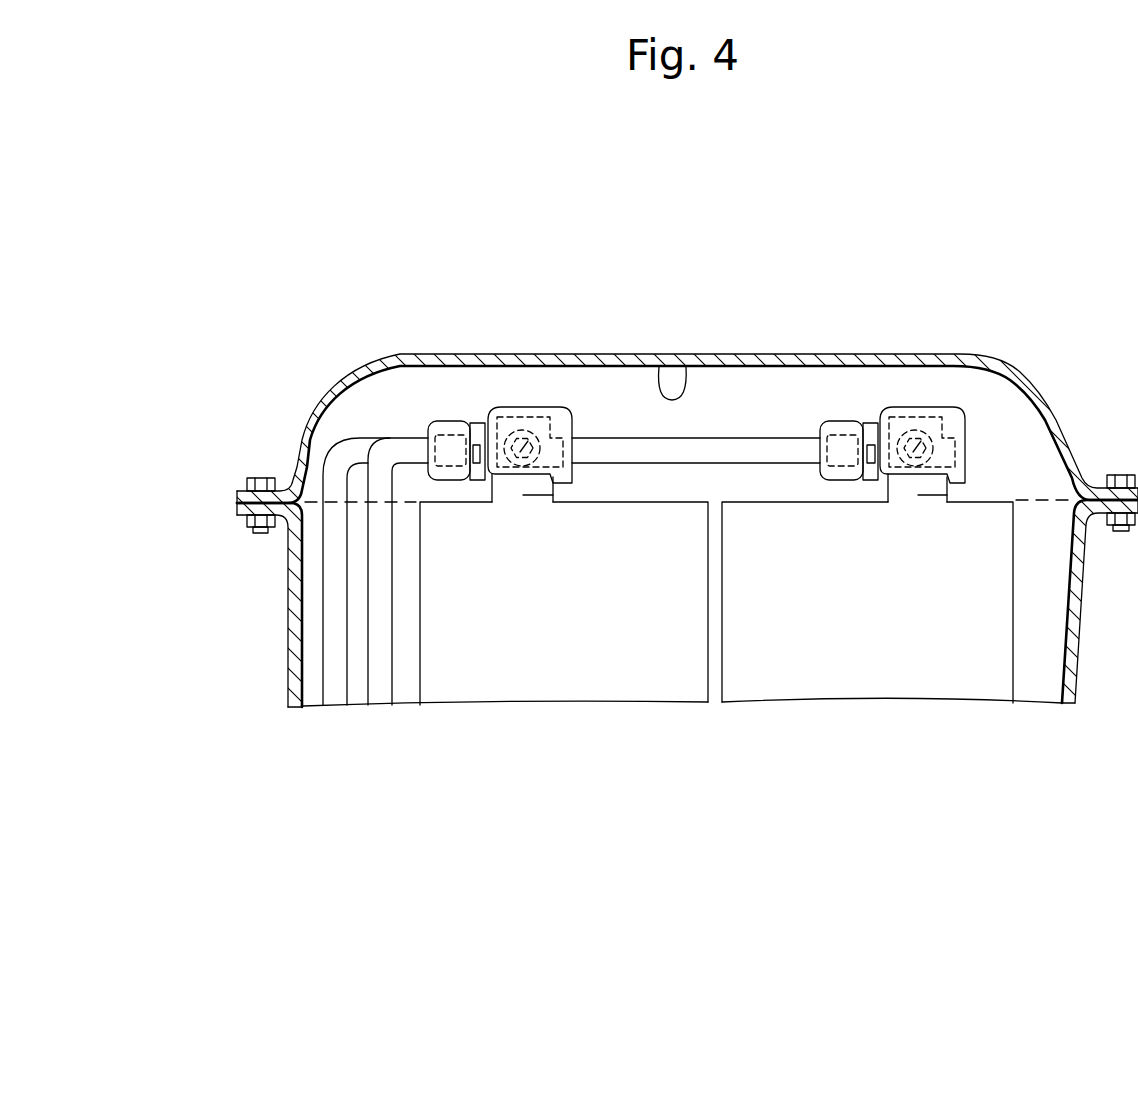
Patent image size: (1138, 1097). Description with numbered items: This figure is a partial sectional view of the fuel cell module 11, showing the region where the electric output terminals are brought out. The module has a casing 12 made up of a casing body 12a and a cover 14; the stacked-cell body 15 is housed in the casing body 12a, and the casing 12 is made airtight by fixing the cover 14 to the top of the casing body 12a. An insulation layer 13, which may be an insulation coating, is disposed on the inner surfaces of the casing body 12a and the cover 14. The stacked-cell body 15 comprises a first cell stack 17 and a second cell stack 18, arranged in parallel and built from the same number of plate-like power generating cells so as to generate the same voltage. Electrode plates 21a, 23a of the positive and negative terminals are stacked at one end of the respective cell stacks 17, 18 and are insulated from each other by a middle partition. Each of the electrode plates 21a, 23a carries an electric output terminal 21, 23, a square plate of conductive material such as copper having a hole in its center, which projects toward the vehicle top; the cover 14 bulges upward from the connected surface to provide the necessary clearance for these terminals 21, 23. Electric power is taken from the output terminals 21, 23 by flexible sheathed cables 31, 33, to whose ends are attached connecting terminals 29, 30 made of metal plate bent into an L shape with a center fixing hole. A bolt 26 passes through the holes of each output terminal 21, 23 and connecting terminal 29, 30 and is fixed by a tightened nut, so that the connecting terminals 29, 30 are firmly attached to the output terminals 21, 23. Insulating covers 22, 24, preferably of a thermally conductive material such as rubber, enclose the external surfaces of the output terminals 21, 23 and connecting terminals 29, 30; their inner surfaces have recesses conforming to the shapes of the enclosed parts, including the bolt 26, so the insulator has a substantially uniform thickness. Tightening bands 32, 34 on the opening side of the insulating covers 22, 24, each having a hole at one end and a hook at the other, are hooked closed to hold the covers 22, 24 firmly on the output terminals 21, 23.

The fuel cell module 11 is at (997, 182).
The casing 12 is at (297, 783).
The casing body 12a is at (288, 674).
The insulation layer 13 is at (686, 366).
The cover 14 is at (293, 440).
The stacked-cell body 15 is at (763, 805).
The first cell stack 17 is at (590, 735).
The second cell stack 18 is at (832, 735).
The electric output terminal 21 is at (555, 502).
The electrode plate 21a is at (533, 655).
The insulating cover 22 is at (523, 405).
The electric output terminal 23 is at (947, 498).
The electrode plate 23a is at (920, 680).
The insulating cover 24 is at (921, 409).
The bolt 26 is at (550, 402).
The connecting terminal 29 is at (497, 405).
The connecting terminal 30 is at (893, 406).
The sheathed cable 31 is at (412, 437).
The tightening band 32 is at (470, 422).
The sheathed cable 33 is at (352, 436).
The tightening band 34 is at (863, 420).